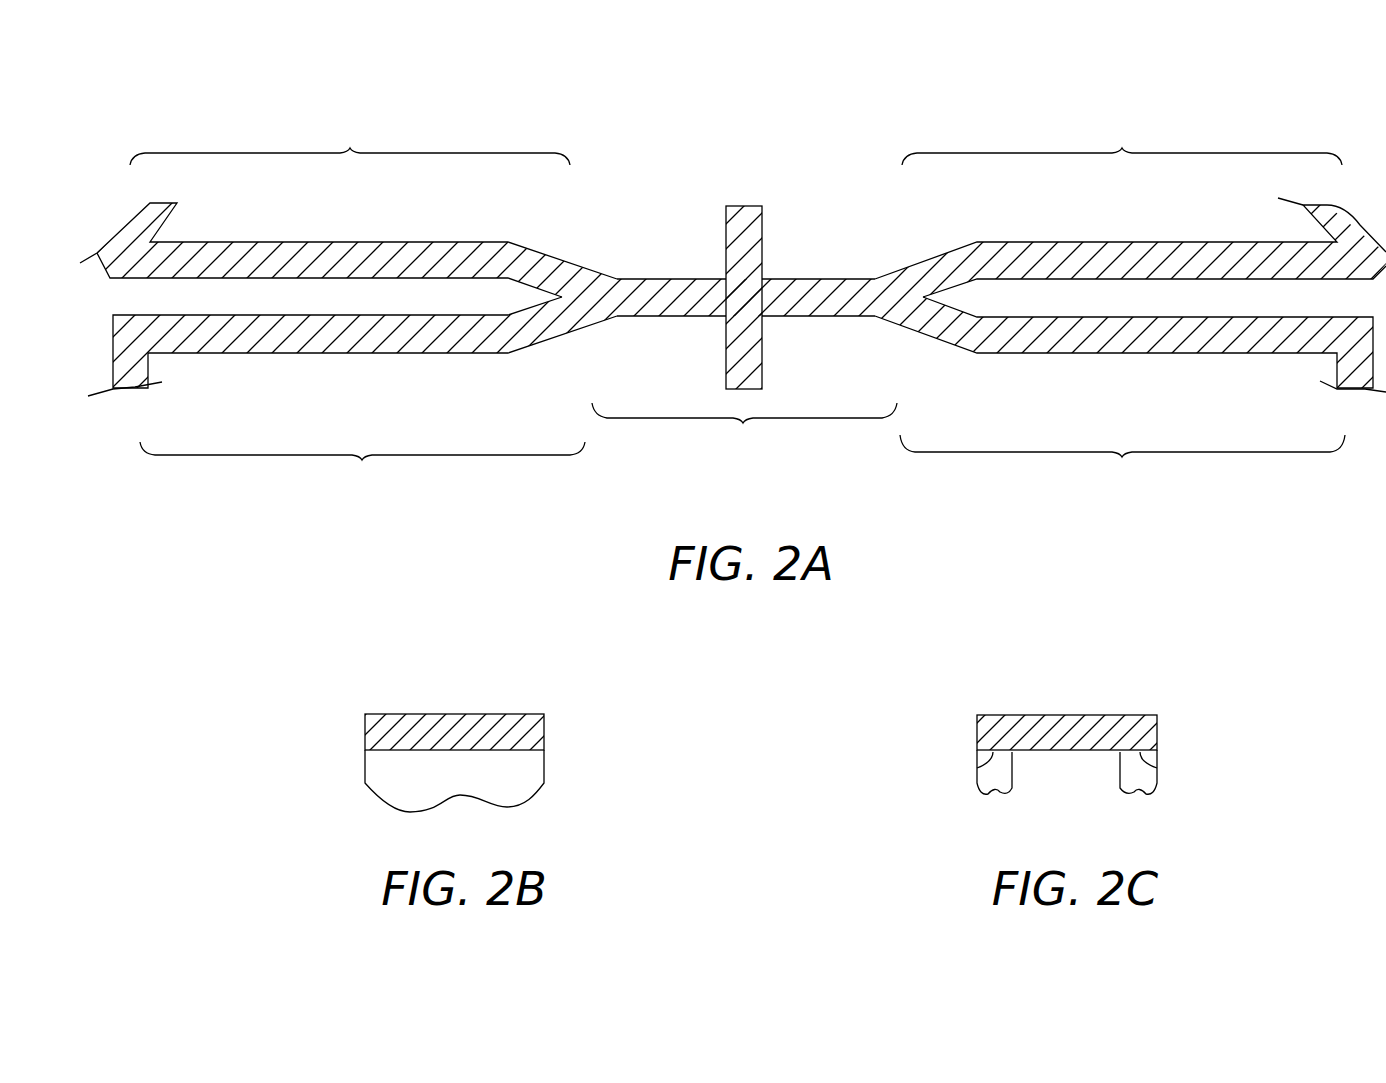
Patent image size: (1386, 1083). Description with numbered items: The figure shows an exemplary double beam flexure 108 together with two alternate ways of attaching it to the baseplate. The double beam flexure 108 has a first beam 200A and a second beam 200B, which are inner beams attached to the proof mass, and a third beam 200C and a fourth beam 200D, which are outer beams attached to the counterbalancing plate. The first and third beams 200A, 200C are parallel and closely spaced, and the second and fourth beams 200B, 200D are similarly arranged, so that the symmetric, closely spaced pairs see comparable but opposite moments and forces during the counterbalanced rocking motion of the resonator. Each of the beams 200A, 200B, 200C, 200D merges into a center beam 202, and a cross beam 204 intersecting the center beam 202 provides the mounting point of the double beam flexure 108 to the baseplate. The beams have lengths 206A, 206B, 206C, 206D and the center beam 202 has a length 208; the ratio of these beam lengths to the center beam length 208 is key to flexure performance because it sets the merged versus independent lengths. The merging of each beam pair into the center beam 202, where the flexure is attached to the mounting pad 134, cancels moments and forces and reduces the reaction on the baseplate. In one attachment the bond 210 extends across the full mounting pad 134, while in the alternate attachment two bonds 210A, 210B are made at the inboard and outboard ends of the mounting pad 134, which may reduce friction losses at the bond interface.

In FIG. 2A, the double beam flexure 108 is at (733, 272).
In FIG. 2B, the double beam flexure 108 is at (449, 737).
In FIG. 2C, the double beam flexure 108 is at (1065, 737).
In FIG. 2B, the mounting pad 134 is at (365, 775).
In FIG. 2C, the mounting pad 134 is at (977, 777).
In FIG. 2A, the first beam 200A is at (400, 242).
In FIG. 2A, the second beam 200B is at (1120, 242).
In FIG. 2A, the third beam 200C is at (365, 353).
In FIG. 2A, the fourth beam 200D is at (1125, 353).
In FIG. 2A, the center beam 202 is at (653, 278).
In FIG. 2A, the cross beam 204 is at (752, 206).
In FIG. 2A, the length of first beam 206A is at (350, 140).
In FIG. 2A, the length of second beam 206B is at (1122, 140).
In FIG. 2A, the length of third beam 206C is at (362, 469).
In FIG. 2A, the length of fourth beam 206D is at (1122, 463).
In FIG. 2A, the length of center beam 208 is at (744, 429).
In FIG. 2B, the bond 210 is at (482, 750).
In FIG. 2C, the first bond 210A is at (1157, 773).
In FIG. 2C, the second bond 210B is at (977, 768).